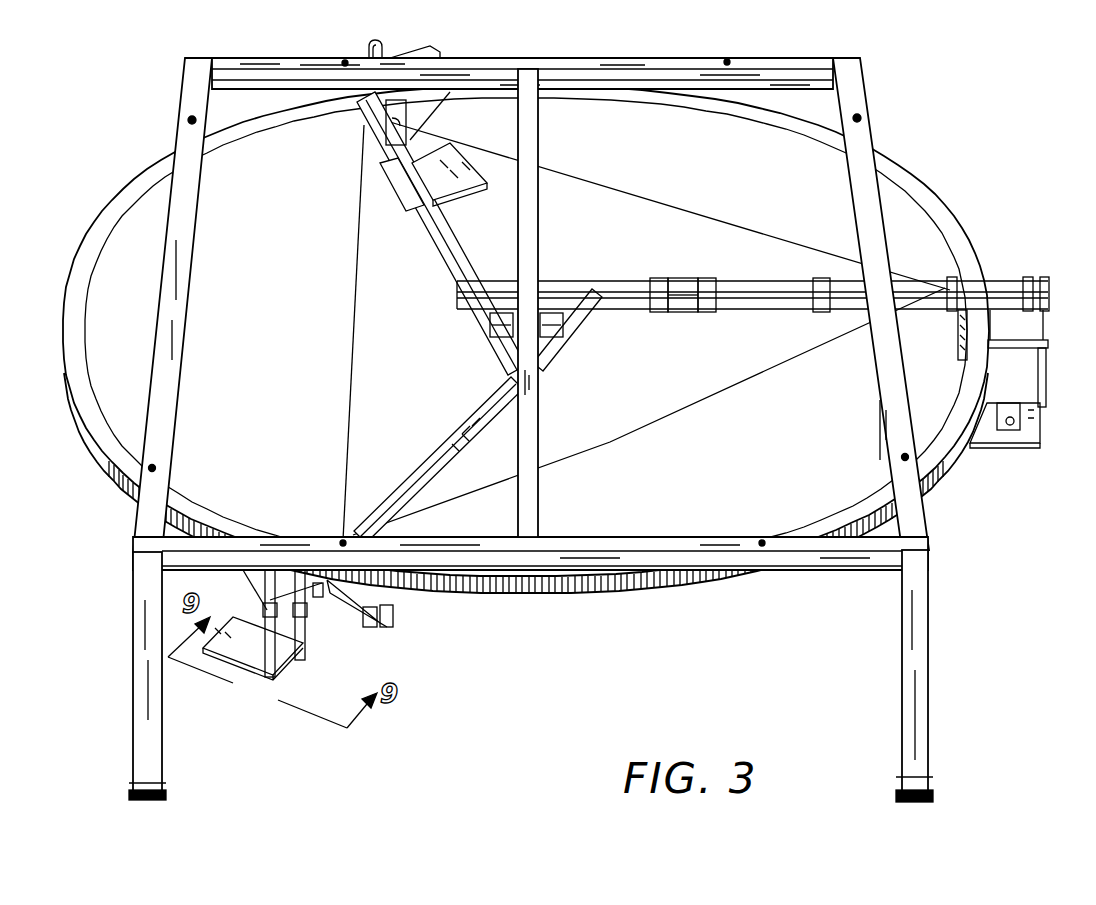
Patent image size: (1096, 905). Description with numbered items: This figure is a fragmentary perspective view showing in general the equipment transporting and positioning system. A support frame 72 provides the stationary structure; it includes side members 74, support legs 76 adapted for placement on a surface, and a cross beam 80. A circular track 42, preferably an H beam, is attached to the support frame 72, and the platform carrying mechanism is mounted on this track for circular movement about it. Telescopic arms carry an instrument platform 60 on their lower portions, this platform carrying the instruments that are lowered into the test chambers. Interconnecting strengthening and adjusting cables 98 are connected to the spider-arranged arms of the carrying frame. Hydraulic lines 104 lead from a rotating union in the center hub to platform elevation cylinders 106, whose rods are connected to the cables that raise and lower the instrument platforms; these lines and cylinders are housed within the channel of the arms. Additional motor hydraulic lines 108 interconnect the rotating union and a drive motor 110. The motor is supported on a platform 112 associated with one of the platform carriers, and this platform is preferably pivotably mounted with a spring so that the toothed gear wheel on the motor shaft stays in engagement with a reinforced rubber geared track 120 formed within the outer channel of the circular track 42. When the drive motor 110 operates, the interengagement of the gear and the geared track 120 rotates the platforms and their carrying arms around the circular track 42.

The circular track 42 is at (560, 594).
The instrument platform 60 is at (252, 686).
The support frame 72 is at (942, 512).
The side members 74 is at (760, 569).
The support legs 76 is at (943, 567).
The cross beam 80 is at (538, 255).
The interconnecting strengthening and adjusting cables 98 is at (573, 463).
The hydraulic lines 104 is at (695, 312).
The platform elevation cylinders 106 is at (720, 311).
The motor hydraulic lines 108 is at (459, 461).
The drive motor 110 is at (362, 627).
The platform 112 is at (390, 618).
The reinforced rubber geared track 120 is at (512, 592).